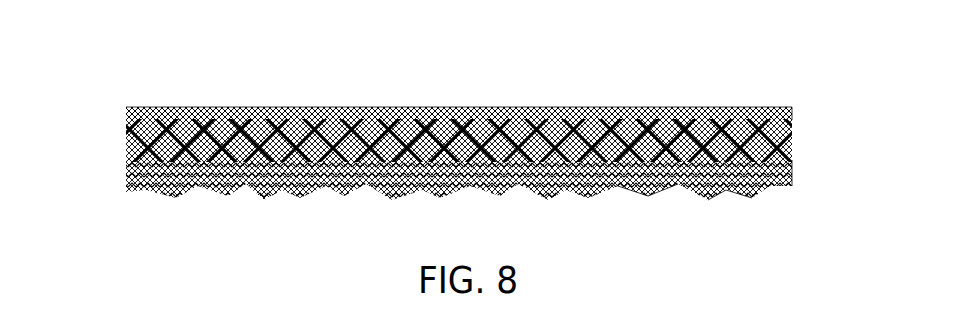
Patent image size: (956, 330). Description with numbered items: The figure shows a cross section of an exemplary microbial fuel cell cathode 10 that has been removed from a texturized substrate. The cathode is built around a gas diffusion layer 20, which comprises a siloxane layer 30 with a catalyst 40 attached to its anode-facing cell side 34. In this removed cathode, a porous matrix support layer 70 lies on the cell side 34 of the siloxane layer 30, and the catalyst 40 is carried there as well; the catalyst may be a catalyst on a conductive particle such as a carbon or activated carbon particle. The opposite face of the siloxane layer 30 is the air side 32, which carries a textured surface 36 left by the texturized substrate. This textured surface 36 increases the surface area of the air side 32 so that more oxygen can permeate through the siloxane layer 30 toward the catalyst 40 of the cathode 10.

The microbial fuel cell cathode 10 is at (212, 90).
The gas diffusion layer 20 is at (787, 170).
The siloxane layer 30 is at (128, 162).
The air side 32 is at (647, 188).
The cell side 34 is at (793, 108).
The textured surface 36 is at (718, 188).
The catalyst 40 is at (145, 107).
The porous matrix support layer 70 is at (127, 137).